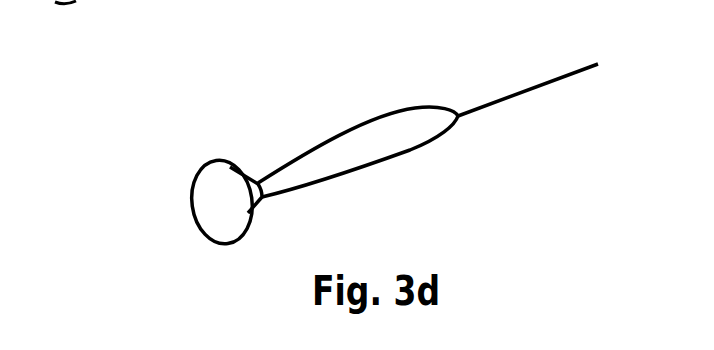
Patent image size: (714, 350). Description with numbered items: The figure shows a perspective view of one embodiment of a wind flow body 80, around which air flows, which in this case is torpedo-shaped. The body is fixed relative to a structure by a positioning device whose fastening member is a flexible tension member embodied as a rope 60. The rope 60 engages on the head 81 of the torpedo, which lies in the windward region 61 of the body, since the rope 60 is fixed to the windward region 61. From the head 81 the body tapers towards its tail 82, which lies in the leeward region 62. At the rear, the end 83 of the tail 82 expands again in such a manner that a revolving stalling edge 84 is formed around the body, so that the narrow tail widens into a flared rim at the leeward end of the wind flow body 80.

The rope 60 is at (560, 82).
The windward region 61 is at (428, 79).
The leeward region 62 is at (167, 183).
The wind flow body 80 is at (198, 102).
The head 81 is at (437, 122).
The tail 82 is at (320, 168).
The end 83 is at (252, 197).
The revolving stalling edge 84 is at (208, 237).